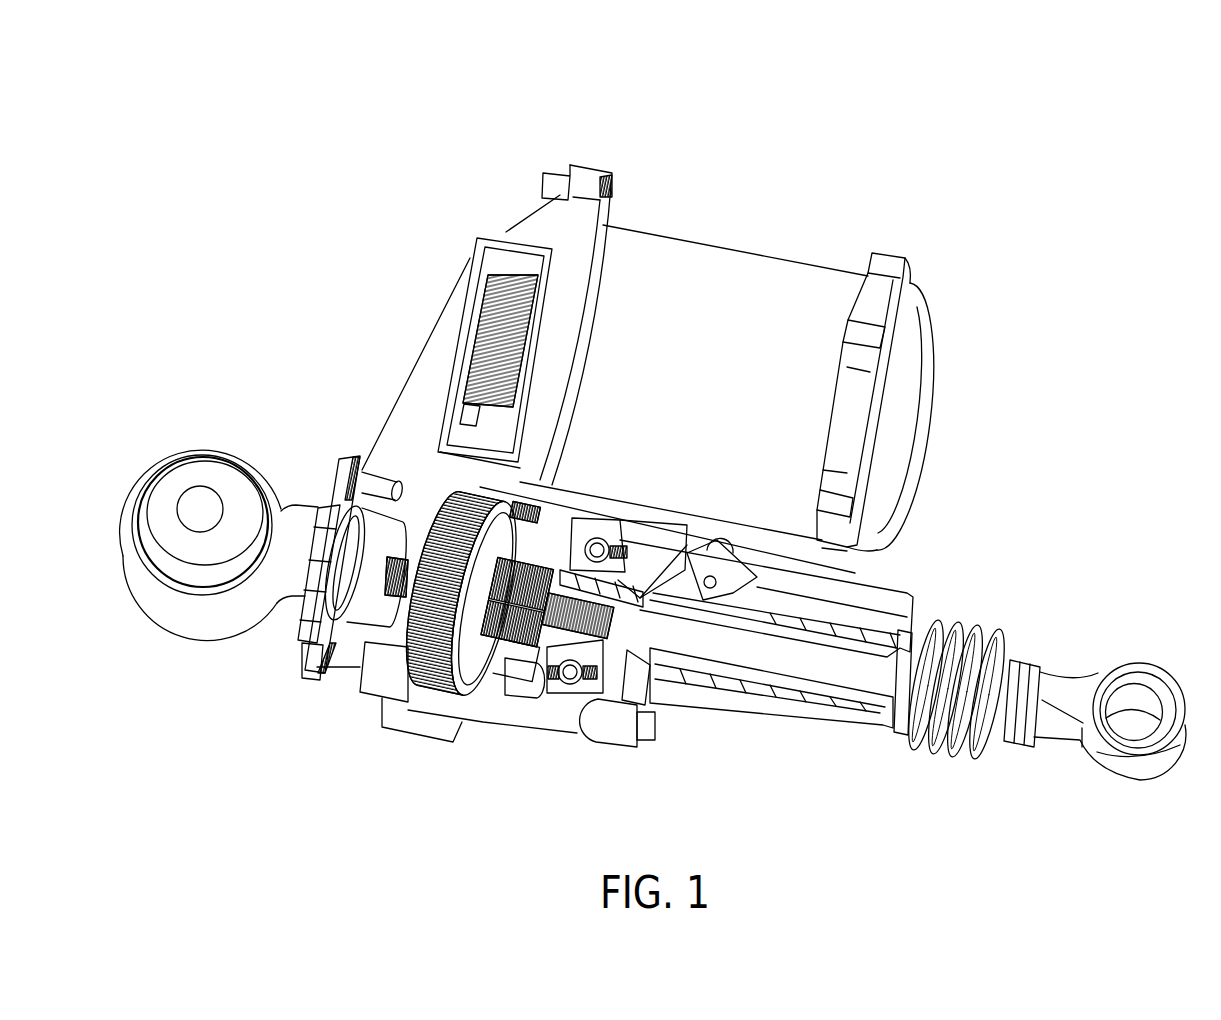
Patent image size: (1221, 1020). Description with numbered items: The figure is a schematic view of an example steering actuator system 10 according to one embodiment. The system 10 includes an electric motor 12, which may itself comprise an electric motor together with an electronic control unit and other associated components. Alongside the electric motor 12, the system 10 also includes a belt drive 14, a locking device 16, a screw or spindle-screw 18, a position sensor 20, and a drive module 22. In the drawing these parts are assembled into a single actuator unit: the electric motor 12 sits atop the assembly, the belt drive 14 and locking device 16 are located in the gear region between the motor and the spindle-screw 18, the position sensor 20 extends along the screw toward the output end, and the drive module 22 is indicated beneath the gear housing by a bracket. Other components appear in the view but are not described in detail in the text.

The steering actuator system 10 is at (451, 117).
The electric motor 12 is at (655, 367).
The belt drive 14 is at (497, 332).
The locking device 16 is at (522, 505).
The spindle-screw 18 is at (405, 557).
The position sensor 20 is at (895, 605).
The drive module 22 is at (382, 742).